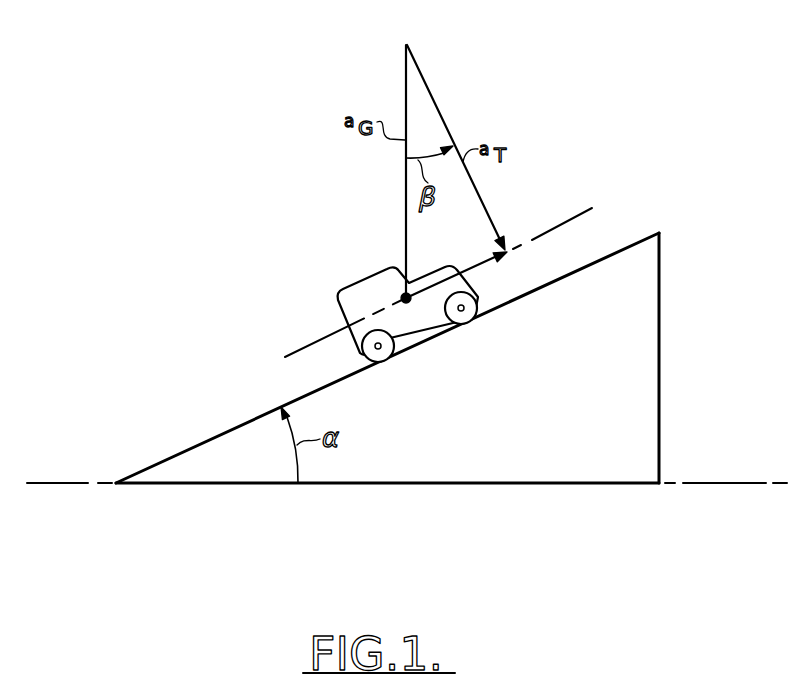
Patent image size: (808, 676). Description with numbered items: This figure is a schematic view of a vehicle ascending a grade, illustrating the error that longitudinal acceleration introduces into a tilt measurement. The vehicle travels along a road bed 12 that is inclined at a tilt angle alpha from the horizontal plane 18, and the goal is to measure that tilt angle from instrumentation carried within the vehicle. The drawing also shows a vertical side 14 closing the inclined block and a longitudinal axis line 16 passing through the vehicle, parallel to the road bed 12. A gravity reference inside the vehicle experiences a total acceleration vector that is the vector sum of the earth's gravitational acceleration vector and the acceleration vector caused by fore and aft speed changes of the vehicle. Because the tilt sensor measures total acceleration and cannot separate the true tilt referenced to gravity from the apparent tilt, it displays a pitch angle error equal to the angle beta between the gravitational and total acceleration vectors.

The road bed 12 is at (616, 252).
The vertical side of incline 14 is at (660, 303).
The vehicle longitudinal axis line 16 is at (292, 349).
The horizontal plane 18 is at (85, 482).